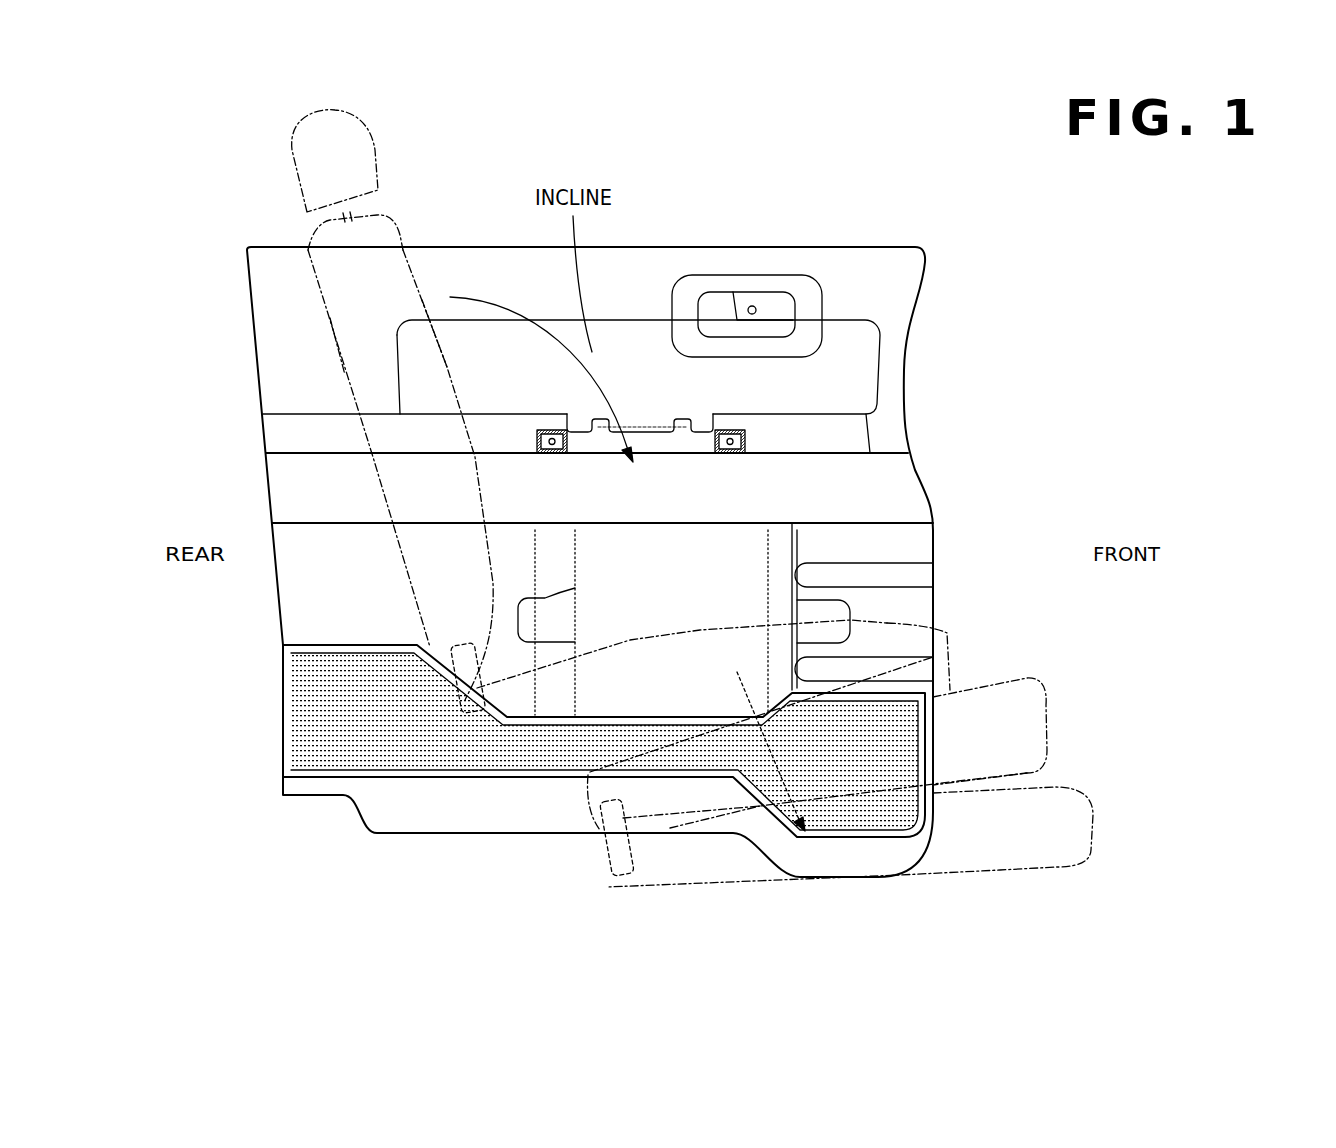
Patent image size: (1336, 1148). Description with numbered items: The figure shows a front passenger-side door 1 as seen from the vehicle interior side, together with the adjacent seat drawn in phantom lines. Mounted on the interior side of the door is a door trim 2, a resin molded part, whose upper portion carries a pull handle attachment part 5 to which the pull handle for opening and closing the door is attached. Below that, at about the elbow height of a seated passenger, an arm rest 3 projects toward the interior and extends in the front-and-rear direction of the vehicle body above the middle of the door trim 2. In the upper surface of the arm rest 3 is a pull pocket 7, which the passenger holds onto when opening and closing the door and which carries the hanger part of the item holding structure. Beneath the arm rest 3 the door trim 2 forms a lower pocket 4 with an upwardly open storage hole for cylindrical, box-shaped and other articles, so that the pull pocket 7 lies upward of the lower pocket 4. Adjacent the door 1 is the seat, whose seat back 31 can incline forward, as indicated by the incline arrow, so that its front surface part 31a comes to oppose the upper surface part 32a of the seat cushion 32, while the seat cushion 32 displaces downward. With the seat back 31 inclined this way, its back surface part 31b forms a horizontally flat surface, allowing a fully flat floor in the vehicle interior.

The front passenger-side door 1 is at (901, 198).
The door trim 2 is at (357, 576).
The arm rest 3 is at (418, 437).
The lower pocket 4 is at (468, 712).
The pull handle attachment part 5 is at (763, 290).
The pull pocket 7 is at (656, 432).
The seat back 31 is at (345, 300).
The front surface part 31a is at (448, 366).
The back surface part 31b is at (345, 375).
The seat cushion 32 is at (933, 657).
The upper surface part 32a is at (887, 623).